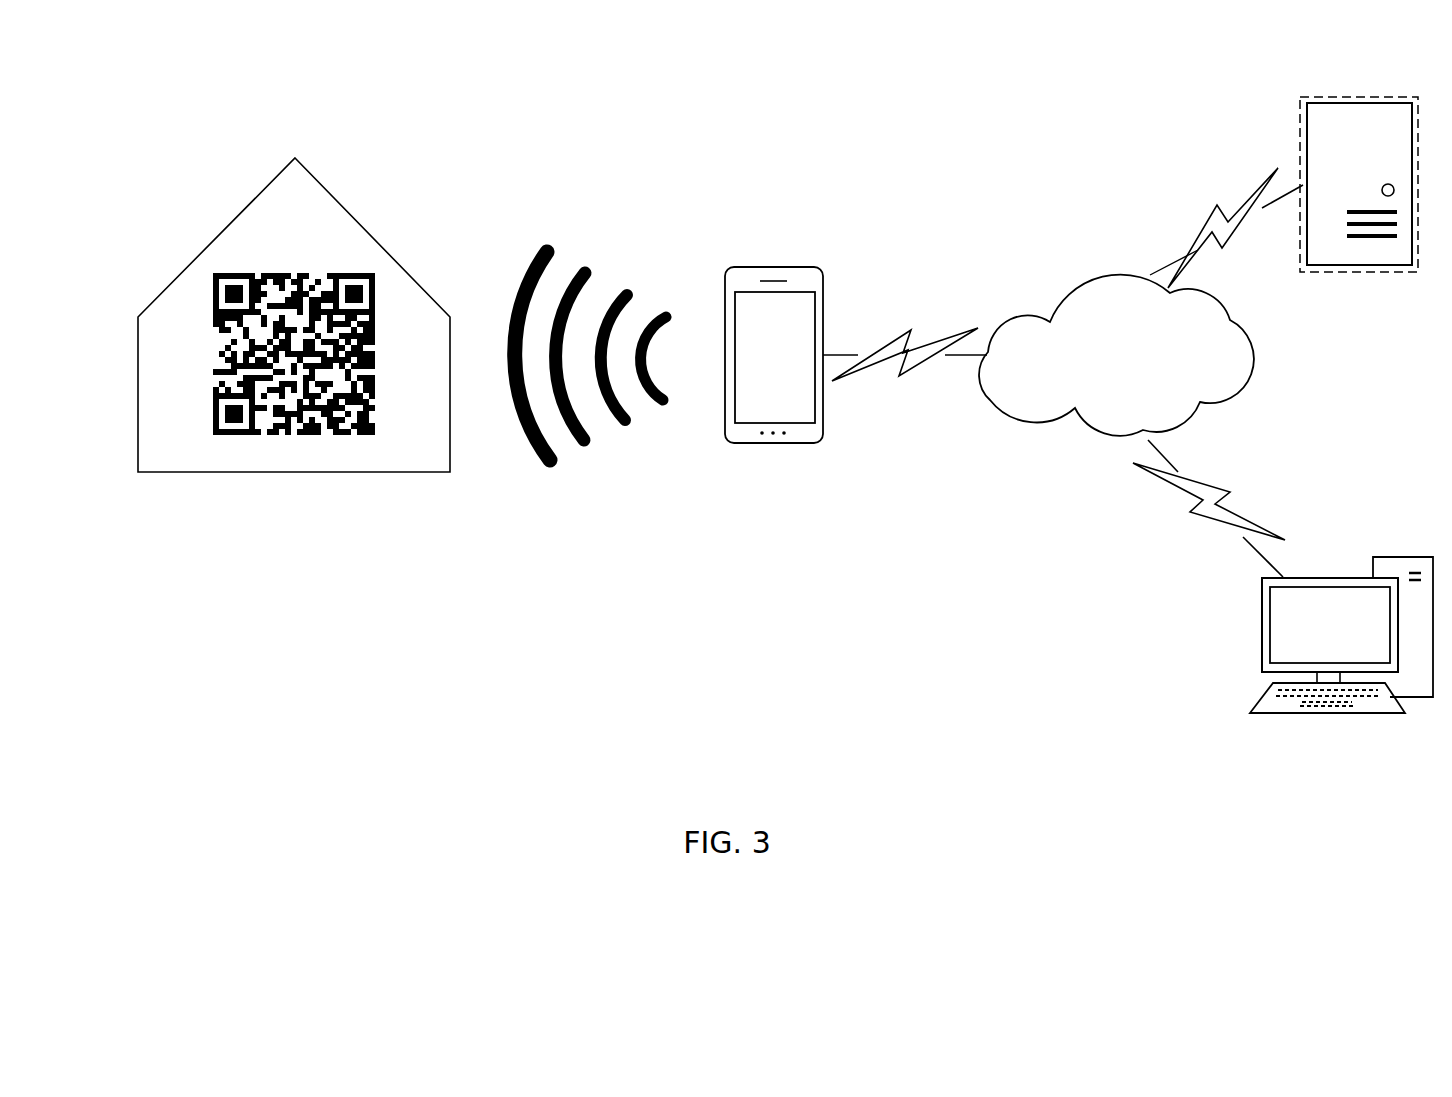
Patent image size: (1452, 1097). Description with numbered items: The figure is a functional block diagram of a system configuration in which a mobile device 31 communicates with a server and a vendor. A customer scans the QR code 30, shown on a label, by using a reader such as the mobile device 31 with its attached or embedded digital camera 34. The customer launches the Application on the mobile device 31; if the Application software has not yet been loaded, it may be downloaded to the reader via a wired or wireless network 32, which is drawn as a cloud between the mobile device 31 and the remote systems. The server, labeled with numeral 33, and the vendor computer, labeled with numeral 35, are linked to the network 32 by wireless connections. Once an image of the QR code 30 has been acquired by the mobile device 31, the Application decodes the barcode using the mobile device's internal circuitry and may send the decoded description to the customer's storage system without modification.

The QR code 30 is at (297, 468).
The mobile device 31 is at (770, 228).
The network 32 is at (1092, 256).
The server 33 is at (1382, 300).
The digital camera 34 is at (713, 338).
The vendor computer 35 is at (1202, 694).